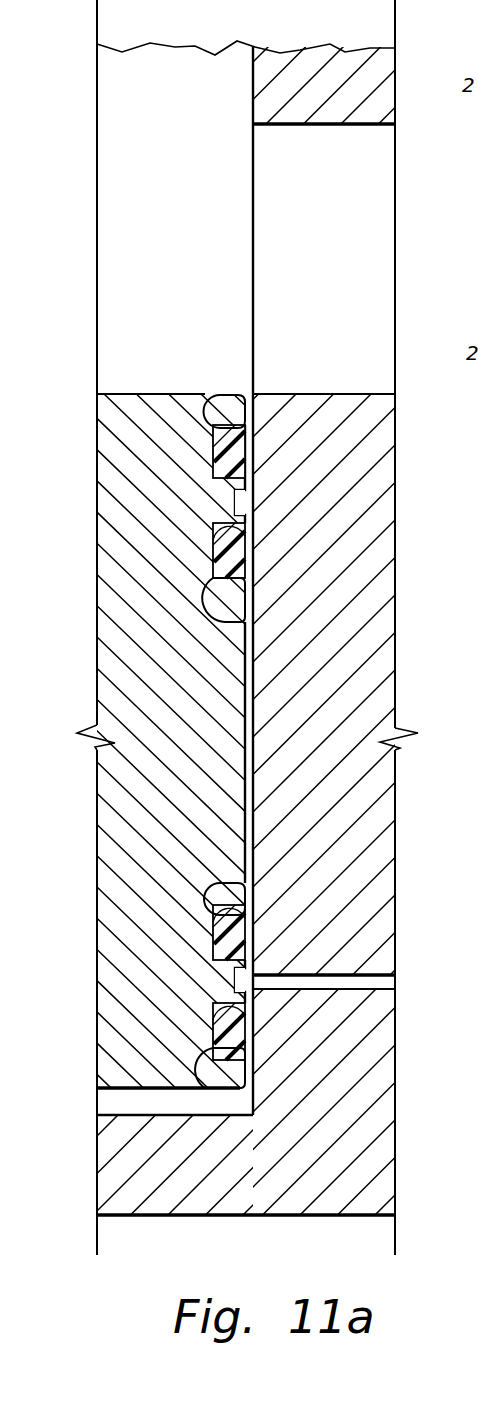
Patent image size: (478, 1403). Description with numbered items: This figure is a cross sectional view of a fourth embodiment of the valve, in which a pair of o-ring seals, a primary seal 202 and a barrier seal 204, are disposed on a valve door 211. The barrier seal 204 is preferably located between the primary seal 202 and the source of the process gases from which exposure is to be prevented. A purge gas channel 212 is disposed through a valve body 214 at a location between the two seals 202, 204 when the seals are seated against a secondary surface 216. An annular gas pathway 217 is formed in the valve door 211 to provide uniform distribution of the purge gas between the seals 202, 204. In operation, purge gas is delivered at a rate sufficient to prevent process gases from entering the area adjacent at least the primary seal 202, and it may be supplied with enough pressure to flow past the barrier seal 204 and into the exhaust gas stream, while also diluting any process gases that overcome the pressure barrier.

The primary seal 202 is at (215, 459).
The barrier seal 204 is at (245, 543).
The valve door 211 is at (102, 468).
The purge gas channel 212 is at (395, 980).
The valve body 214 is at (102, 1166).
The secondary surface 216 is at (213, 395).
The annular gas pathway 217 is at (253, 985).